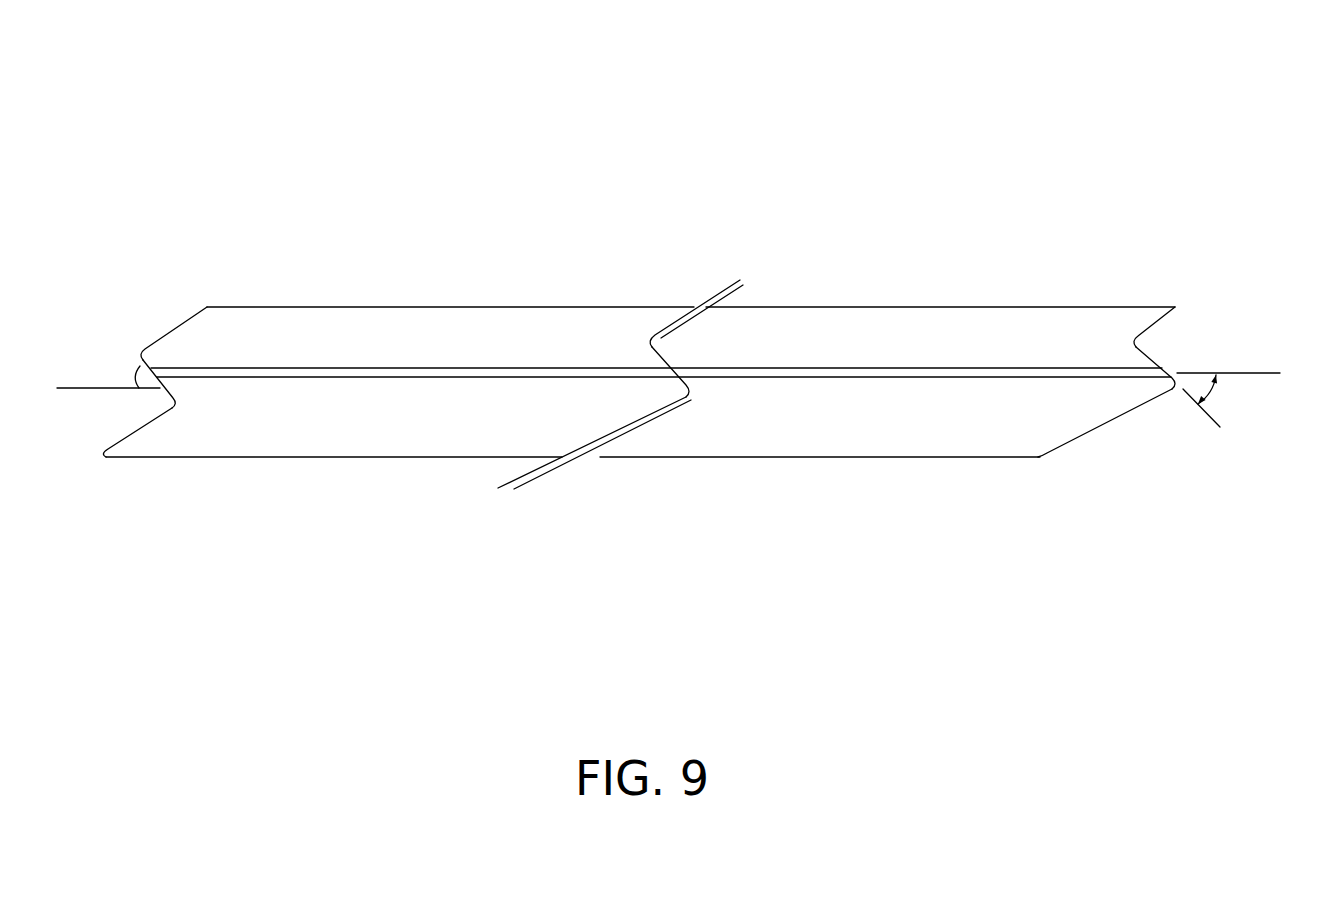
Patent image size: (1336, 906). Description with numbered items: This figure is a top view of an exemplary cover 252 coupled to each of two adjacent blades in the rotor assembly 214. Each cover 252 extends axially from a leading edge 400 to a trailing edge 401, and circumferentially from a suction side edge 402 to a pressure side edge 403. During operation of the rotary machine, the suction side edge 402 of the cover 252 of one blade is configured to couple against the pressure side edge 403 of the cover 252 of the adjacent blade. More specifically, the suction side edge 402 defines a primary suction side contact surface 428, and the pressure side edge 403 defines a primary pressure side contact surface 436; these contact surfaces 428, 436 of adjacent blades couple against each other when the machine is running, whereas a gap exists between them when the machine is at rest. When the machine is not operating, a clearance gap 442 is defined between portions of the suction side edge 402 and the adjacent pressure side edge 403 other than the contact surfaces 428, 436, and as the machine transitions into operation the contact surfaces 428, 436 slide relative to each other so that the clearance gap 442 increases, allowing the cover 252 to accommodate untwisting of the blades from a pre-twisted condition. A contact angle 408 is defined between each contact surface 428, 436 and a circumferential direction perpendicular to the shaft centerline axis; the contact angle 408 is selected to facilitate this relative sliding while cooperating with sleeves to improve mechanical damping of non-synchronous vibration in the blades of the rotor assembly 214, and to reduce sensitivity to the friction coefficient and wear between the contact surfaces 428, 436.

The rotor assembly 214 is at (648, 120).
The cover 252 is at (334, 262).
The leading edge 400 is at (193, 458).
The trailing edge 401 is at (242, 307).
The suction side edge 402 is at (173, 326).
The pressure side edge 403 is at (641, 408).
The contact angle 408 is at (137, 377).
The primary suction side contact surface 428 is at (140, 360).
The primary pressure side contact surface 436 is at (655, 362).
The clearance gap 442 is at (770, 335).